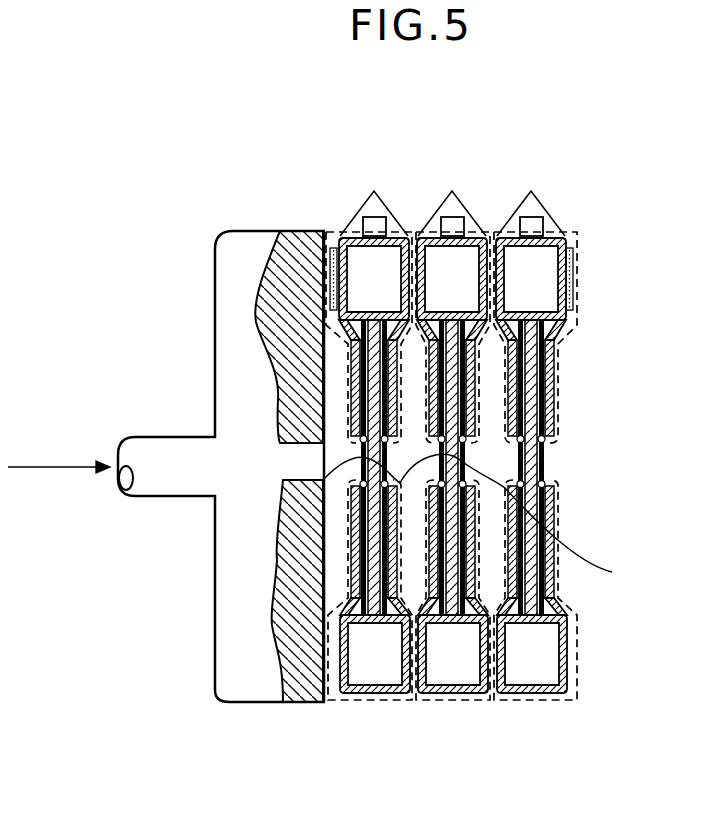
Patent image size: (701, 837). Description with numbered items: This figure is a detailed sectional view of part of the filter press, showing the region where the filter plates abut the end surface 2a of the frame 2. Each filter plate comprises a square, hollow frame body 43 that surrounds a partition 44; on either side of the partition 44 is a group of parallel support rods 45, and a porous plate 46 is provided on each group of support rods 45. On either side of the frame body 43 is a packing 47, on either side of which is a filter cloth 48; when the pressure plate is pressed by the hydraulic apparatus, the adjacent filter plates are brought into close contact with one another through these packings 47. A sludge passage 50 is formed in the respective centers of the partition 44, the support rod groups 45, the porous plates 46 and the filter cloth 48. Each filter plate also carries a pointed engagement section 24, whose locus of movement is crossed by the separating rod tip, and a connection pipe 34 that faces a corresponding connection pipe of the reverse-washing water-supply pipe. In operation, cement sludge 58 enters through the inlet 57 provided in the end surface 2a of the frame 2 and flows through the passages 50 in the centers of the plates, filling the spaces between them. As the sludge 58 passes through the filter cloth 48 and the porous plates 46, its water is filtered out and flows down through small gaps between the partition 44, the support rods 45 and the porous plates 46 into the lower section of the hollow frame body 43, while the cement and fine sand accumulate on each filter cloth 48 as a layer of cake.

The frame 2 is at (215, 362).
The end surface 2a is at (215, 287).
The pointed engagement section 24 is at (371, 200).
The connection pipe 34 is at (378, 222).
The frame body 43 is at (343, 236).
The partition 44 is at (530, 358).
The parallel support rods 45 is at (540, 373).
The porous plate 46 is at (548, 415).
The packing 47 is at (495, 232).
The filter cloth 48 is at (578, 292).
The sludge passage 50 is at (395, 490).
The inlet 57 is at (288, 462).
The sludge 58 is at (59, 511).